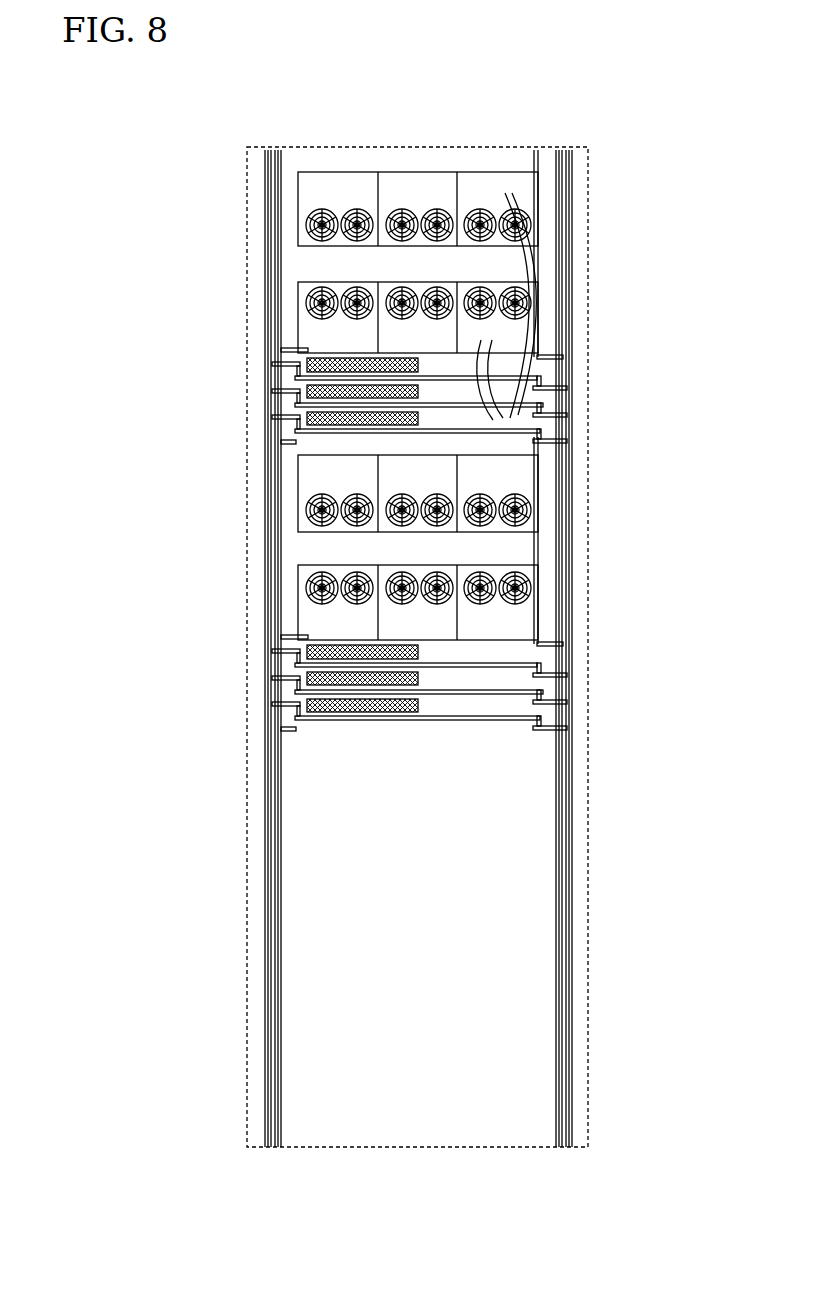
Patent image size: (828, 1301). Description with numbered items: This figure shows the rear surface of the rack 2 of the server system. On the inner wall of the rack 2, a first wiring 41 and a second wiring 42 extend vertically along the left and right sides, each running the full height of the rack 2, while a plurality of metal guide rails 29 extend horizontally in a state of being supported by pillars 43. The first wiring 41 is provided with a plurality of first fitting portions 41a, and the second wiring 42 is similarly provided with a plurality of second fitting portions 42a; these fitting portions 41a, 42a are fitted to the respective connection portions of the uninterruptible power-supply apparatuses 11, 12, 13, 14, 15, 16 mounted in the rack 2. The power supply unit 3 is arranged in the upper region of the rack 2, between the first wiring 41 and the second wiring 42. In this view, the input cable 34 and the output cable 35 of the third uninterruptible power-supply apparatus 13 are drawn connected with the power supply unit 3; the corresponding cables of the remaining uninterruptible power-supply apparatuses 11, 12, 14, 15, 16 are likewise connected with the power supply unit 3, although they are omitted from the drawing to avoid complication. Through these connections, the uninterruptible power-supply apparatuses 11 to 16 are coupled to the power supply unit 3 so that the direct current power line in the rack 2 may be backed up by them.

The rack 2 is at (245, 215).
The power supply unit 3 is at (472, 180).
The uninterruptible power-supply apparatus 11 is at (545, 358).
The uninterruptible power-supply apparatus 12 is at (540, 384).
The third uninterruptible power-supply apparatus 13 is at (535, 416).
The uninterruptible power-supply apparatus 14 is at (433, 652).
The uninterruptible power-supply apparatus 15 is at (452, 682).
The uninterruptible power-supply apparatus 16 is at (468, 702).
The metal guide rail 29 is at (293, 717).
The input cable 34 is at (538, 274).
The output cable 35 is at (490, 350).
The first wiring 41 is at (265, 882).
The first fitting portion 41a is at (317, 672).
The second wiring 42 is at (572, 882).
The second fitting portion 42a is at (538, 680).
The pillar 43 is at (283, 972).